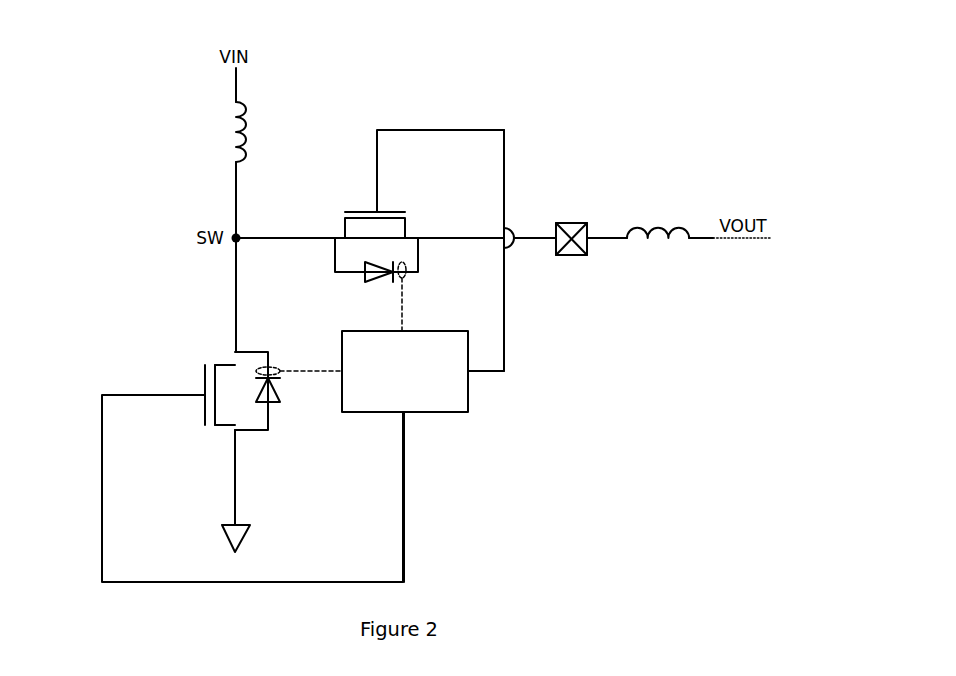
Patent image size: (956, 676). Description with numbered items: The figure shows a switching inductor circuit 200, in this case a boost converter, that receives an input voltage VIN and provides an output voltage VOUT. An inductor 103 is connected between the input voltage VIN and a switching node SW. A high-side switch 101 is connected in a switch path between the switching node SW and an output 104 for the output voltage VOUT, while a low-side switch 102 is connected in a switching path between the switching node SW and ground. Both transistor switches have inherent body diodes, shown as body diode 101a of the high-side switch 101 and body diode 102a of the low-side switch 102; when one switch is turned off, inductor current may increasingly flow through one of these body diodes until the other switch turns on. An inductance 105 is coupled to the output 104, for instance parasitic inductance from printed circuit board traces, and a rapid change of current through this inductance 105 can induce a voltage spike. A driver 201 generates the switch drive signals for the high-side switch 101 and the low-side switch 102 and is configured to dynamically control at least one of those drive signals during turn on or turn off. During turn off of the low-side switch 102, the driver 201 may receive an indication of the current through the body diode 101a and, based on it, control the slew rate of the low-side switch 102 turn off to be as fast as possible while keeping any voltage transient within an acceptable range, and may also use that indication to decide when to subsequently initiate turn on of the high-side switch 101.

The switching inductor circuit 200 is at (604, 98).
The inductor 103 is at (240, 128).
The high-side switch 101 is at (403, 210).
The body diode 101a is at (363, 278).
The low-side switch 102 is at (202, 415).
The body diode 102a is at (281, 405).
The driver 201 is at (388, 389).
The output 104 is at (567, 222).
The inductance 105 is at (663, 227).